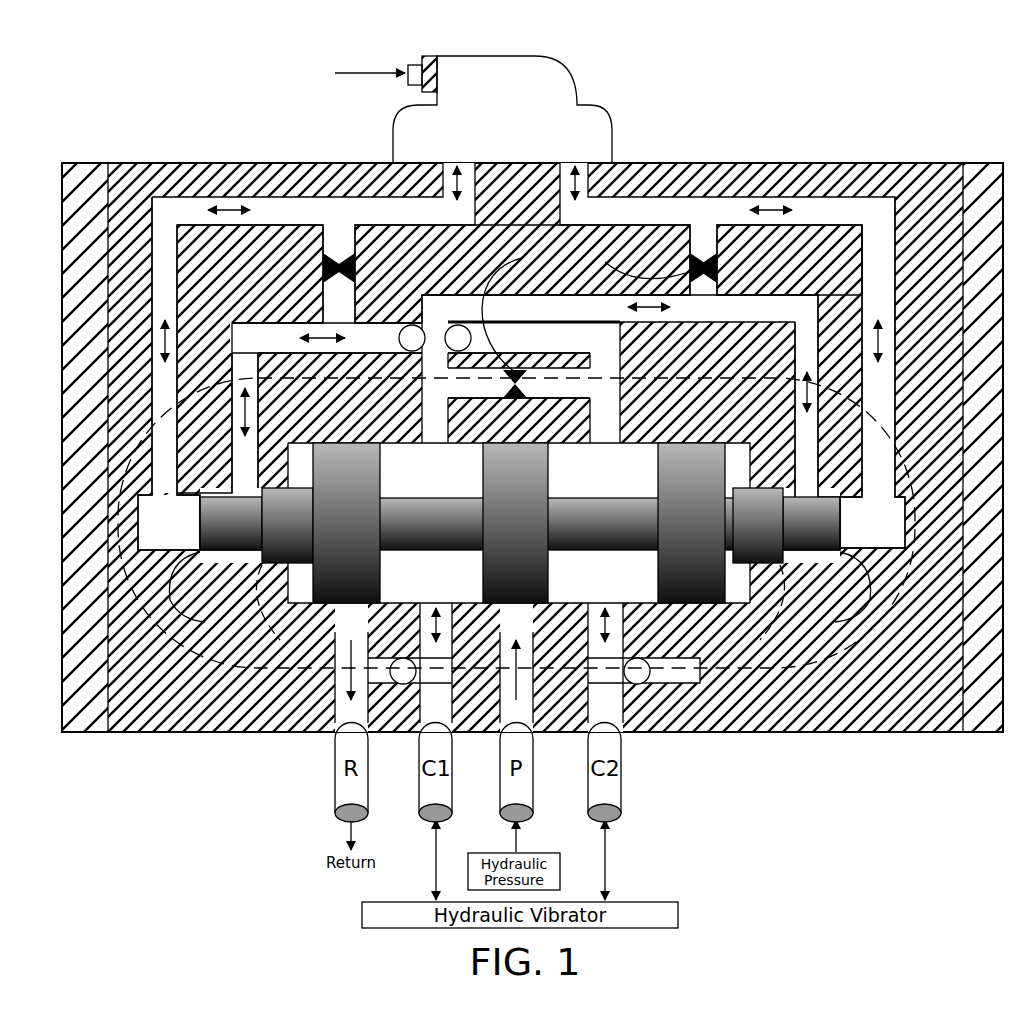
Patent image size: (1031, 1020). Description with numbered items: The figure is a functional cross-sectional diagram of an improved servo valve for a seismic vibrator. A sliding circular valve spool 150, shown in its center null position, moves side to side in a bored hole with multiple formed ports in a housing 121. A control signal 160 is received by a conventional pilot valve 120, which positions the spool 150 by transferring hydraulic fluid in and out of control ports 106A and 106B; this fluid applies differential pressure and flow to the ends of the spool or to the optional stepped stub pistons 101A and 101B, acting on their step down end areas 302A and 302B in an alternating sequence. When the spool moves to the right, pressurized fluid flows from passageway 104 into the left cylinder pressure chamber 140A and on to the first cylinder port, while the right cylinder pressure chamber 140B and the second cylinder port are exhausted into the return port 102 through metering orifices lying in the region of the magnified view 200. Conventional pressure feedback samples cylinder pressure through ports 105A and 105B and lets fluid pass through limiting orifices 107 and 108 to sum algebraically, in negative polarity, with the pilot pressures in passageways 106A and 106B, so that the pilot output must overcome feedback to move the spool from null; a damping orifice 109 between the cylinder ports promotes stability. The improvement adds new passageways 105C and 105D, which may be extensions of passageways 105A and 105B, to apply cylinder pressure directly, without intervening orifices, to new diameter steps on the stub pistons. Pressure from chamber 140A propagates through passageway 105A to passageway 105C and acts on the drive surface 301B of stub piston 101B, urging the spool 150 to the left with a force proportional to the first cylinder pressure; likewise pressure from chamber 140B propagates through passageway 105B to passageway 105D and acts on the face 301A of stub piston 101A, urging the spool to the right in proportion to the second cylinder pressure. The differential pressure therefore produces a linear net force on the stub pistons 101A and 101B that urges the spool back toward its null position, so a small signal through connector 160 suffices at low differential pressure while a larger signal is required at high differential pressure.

The stub piston 101A is at (256, 525).
The stub piston 101B is at (786, 525).
The return port 102 is at (519, 523).
The passageway 104 is at (515, 523).
The port 105A is at (556, 347).
The port 105B is at (467, 363).
The new passageway 105C is at (754, 395).
The new passageway 105D is at (327, 408).
The control port 106A is at (291, 373).
The control port 106B is at (754, 372).
The limiting orifice 107 is at (338, 268).
The limiting orifice 108 is at (650, 256).
The damping orifice 109 is at (526, 305).
The pilot valve 120 is at (502, 109).
The housing 121 is at (536, 457).
The left cylinder pressure chamber 140A is at (431, 523).
The right cylinder pressure chamber 140B is at (603, 523).
The valve spool 150 is at (520, 524).
The control signal 160 is at (355, 78).
The magnified view 200 is at (905, 440).
The new face 301A is at (263, 602).
The new drive surface 301B is at (783, 607).
The step down end area 302A is at (193, 587).
The step down end area 302B is at (851, 589).